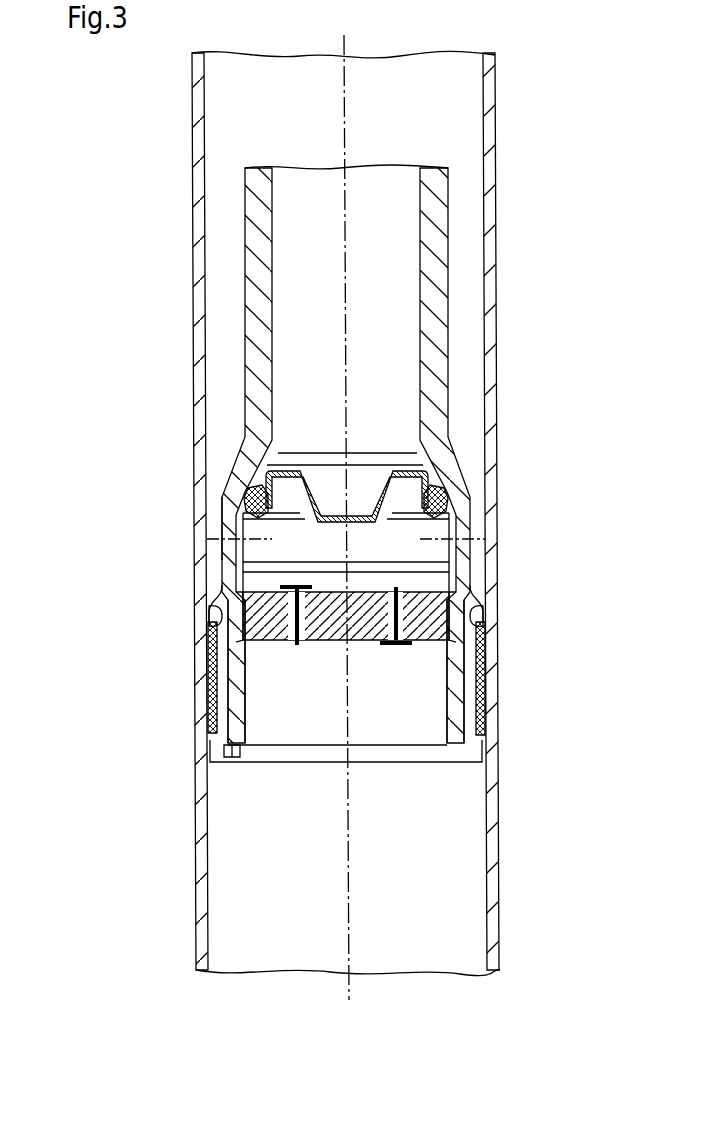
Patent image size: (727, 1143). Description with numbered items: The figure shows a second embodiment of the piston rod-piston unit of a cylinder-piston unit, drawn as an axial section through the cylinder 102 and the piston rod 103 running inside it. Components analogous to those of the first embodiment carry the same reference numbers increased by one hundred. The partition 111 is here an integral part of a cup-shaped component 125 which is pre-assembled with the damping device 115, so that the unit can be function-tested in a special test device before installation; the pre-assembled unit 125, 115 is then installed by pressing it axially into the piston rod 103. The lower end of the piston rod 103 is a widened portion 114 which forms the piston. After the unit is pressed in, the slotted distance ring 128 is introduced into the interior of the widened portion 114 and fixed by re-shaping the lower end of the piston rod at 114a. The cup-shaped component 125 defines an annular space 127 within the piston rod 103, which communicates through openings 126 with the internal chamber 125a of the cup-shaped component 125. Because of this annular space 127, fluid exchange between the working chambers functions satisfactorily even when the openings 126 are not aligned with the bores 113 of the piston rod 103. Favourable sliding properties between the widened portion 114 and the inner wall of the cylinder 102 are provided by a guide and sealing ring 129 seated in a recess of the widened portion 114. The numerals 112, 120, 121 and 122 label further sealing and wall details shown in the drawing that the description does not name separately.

The cylinder 102 is at (486, 105).
The piston rod 103 is at (258, 232).
The partition 111 is at (410, 462).
The sealing bead 112 is at (437, 498).
The bores 113 is at (458, 530).
The widened portion 114 is at (227, 605).
The re-shaped lower end 114a is at (240, 757).
The damping device 115 is at (212, 623).
The flared wall section 120 is at (240, 490).
The sealing bead 121 is at (232, 510).
The inner sleeve 122 is at (238, 588).
The cup-shaped component 125 is at (452, 570).
The internal chamber 125a is at (373, 548).
The openings 126 is at (240, 518).
The annular space 127 is at (452, 512).
The slotted distance ring 128 is at (212, 698).
The guide and sealing ring 129 is at (492, 690).